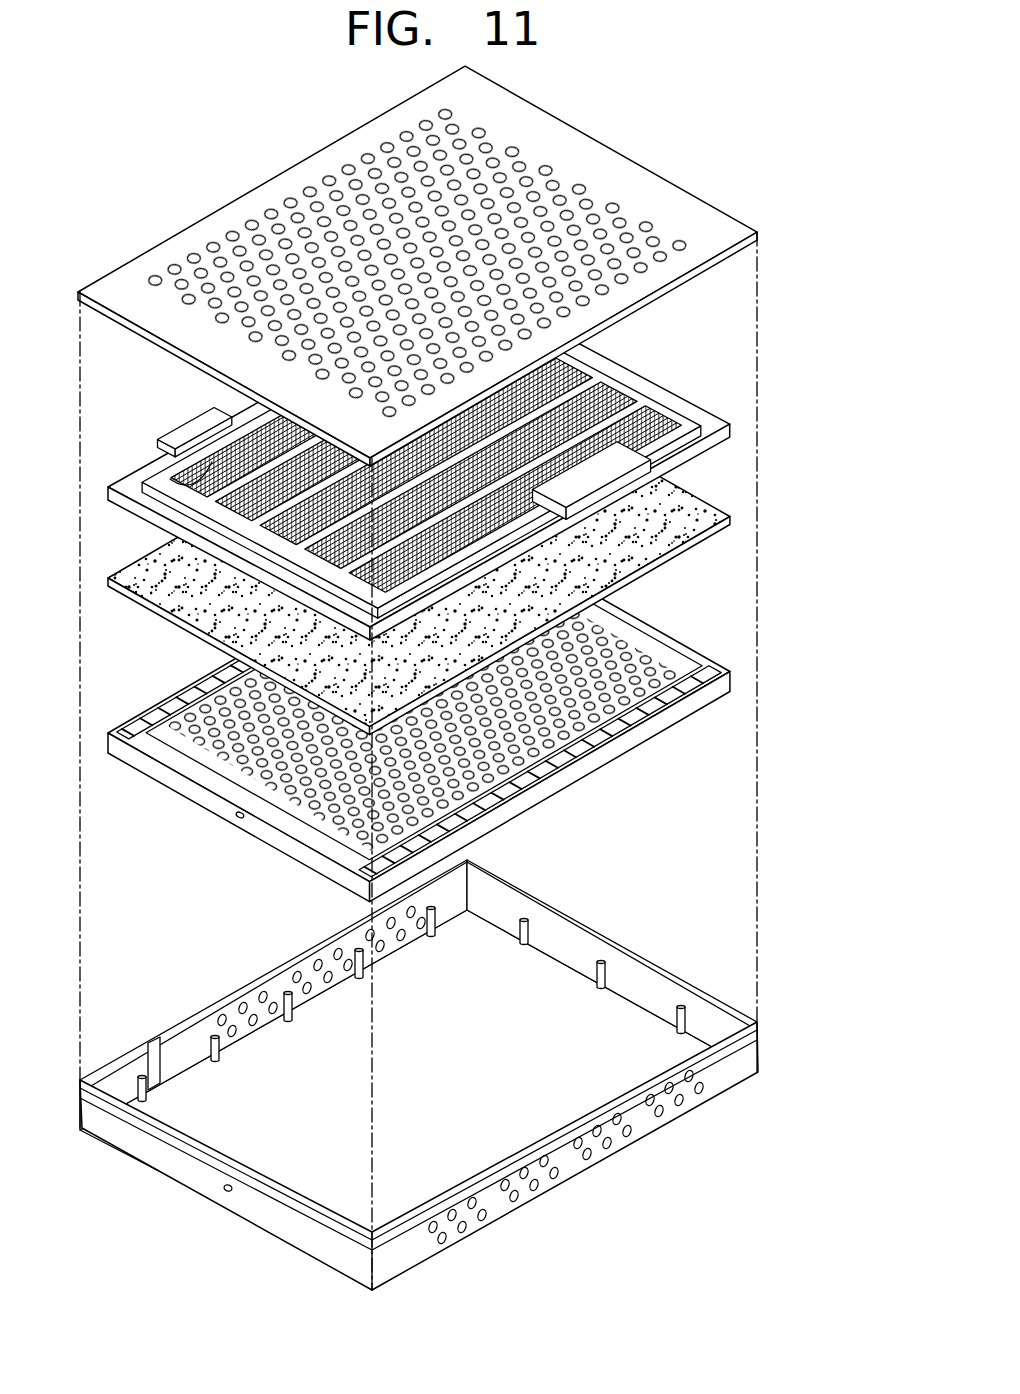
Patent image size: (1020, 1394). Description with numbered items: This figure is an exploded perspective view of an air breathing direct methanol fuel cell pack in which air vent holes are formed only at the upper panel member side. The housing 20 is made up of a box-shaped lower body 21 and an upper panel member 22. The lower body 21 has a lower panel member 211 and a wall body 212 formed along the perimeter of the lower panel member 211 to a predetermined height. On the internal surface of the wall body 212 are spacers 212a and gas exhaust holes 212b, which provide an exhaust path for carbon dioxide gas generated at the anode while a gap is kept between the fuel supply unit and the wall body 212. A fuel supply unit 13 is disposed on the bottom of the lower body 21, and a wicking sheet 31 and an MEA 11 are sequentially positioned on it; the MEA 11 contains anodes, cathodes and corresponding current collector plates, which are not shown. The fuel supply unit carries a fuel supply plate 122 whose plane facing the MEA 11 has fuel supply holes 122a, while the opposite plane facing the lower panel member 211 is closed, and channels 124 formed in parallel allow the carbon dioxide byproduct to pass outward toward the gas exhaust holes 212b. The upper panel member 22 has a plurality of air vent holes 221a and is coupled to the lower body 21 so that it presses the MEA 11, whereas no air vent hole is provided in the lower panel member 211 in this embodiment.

The housing 20 is at (470, 484).
The upper panel member 22 is at (439, 266).
The air vent holes 221a is at (556, 145).
The MEA 11 is at (730, 440).
The wicking sheet 31 is at (729, 529).
The fuel supply unit 13 is at (453, 712).
The fuel supply plate 122 is at (162, 725).
The fuel supply holes 122a is at (222, 756).
The channels 124 is at (548, 775).
The lower body 21 is at (441, 1078).
The lower panel member 211 is at (200, 1093).
The wall body 212 is at (497, 1207).
The spacers 212a is at (600, 963).
The gas exhaust holes 212b is at (443, 1240).